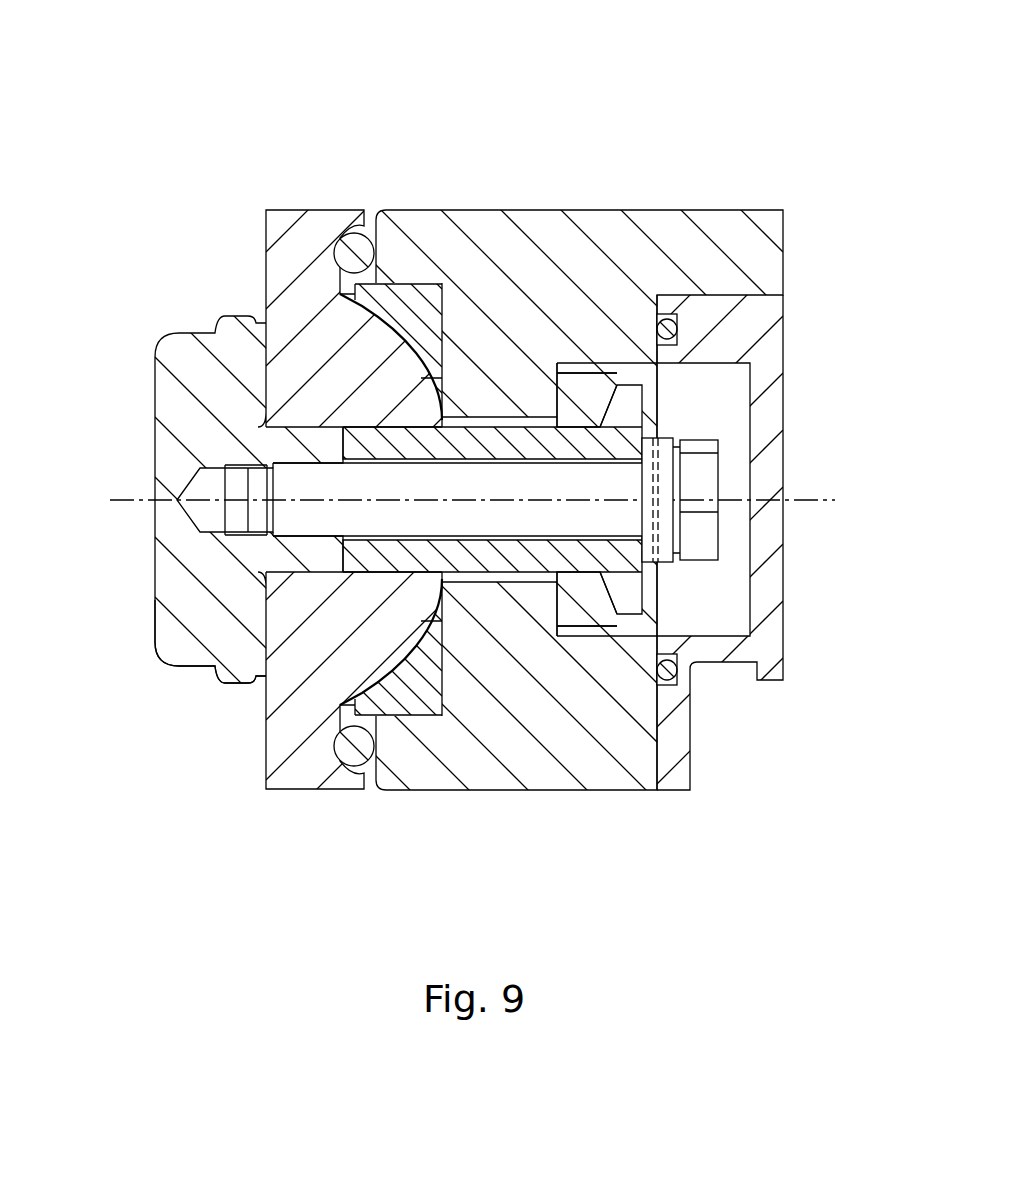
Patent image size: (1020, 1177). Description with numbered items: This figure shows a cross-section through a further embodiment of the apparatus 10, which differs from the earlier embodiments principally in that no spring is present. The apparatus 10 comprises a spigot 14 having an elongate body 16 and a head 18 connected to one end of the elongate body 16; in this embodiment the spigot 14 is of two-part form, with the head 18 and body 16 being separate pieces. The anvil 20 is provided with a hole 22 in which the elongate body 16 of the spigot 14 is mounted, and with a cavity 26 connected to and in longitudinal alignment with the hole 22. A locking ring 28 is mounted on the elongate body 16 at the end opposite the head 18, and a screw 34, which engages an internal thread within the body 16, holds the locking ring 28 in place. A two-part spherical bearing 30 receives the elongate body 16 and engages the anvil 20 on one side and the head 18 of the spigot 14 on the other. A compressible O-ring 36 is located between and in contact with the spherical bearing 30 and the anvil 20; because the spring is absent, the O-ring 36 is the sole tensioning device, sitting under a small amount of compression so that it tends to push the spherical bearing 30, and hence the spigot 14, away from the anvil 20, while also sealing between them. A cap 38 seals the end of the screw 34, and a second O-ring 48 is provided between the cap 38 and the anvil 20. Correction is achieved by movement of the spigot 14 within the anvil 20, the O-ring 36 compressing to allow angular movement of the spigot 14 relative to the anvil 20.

The apparatus 10 is at (270, 108).
The spigot 14 is at (155, 405).
The elongate body 16 is at (503, 550).
The head 18 is at (155, 604).
The anvil 20 is at (623, 211).
The hole 22 is at (505, 417).
The cavity 26 is at (680, 597).
The locking ring 28 is at (607, 373).
The two-part spherical bearing 30 is at (311, 220).
The screw 34 is at (718, 468).
The O-ring 36 is at (350, 753).
The cap 38 is at (785, 336).
The second O-ring 48 is at (678, 680).